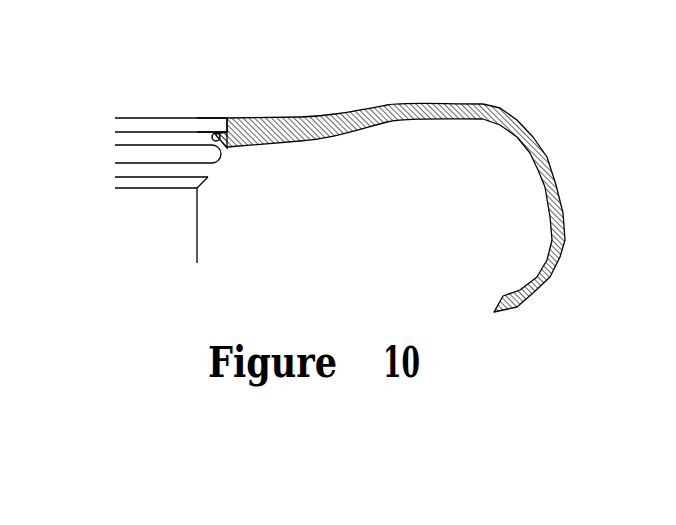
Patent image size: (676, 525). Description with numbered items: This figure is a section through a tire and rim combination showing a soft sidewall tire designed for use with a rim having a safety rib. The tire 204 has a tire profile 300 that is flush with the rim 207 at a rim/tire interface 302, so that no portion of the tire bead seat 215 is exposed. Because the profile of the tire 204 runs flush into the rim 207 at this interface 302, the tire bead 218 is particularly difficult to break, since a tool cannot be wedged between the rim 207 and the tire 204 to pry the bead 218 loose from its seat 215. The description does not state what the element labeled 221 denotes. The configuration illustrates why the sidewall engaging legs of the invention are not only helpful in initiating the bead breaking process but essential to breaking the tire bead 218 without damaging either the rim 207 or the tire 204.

The tire profile 300 is at (350, 95).
The tire 204 is at (515, 115).
The rim 207 is at (211, 117).
The rim/tire interface 302 is at (230, 117).
The tire bead seat 215 is at (210, 137).
The tire bead 218 is at (222, 140).
The rounded end 221 is at (210, 157).